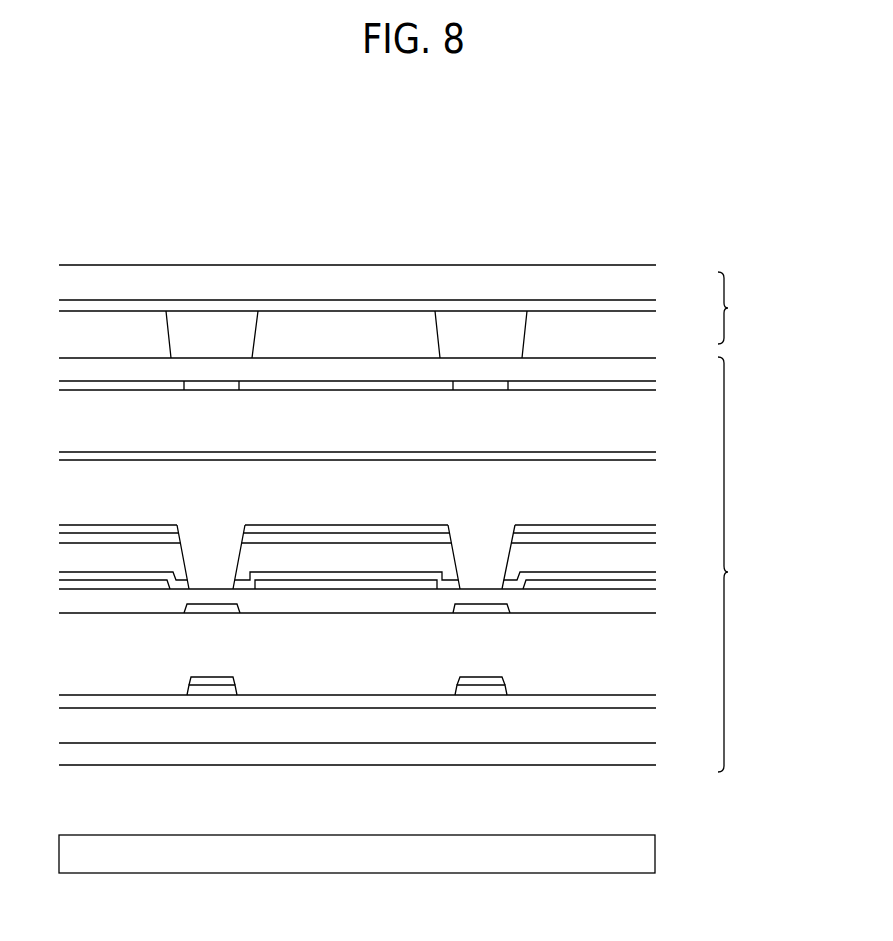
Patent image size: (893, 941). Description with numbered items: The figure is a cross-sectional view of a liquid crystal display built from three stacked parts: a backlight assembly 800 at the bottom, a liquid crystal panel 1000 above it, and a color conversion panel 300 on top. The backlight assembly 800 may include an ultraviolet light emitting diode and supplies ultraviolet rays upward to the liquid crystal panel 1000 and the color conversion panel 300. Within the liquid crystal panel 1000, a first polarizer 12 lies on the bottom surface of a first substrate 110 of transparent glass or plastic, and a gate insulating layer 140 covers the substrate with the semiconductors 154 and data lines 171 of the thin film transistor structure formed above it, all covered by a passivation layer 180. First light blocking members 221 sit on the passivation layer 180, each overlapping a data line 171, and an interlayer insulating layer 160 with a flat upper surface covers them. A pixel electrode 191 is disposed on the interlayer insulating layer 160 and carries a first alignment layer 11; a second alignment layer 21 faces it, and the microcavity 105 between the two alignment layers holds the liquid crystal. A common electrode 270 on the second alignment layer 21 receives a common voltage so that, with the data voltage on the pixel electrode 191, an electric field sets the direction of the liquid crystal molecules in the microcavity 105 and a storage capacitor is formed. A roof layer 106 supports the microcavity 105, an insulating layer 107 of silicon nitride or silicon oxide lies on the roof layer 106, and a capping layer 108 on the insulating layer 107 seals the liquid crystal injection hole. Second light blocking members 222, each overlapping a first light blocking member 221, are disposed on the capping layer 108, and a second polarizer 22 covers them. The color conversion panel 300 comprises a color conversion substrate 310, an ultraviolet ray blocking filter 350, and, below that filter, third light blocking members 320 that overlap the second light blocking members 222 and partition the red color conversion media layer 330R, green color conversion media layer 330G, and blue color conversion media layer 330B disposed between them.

The color conversion substrate 310 is at (640, 282).
The ultraviolet ray blocking filter 350 is at (645, 304).
The color conversion panel 300 is at (742, 308).
The third light blocking member 320 is at (491, 335).
The red color conversion media layer 330R is at (133, 348).
The green color conversion media layer 330G is at (369, 347).
The blue color conversion media layer 330B is at (615, 348).
The second polarizer 22 is at (647, 372).
The second light blocking member 222 is at (469, 385).
The capping layer 108 is at (647, 420).
The insulating layer 107 is at (647, 455).
The roof layer 106 is at (647, 492).
The common electrode 270 is at (333, 529).
The second alignment layer 21 is at (395, 538).
The microcavity 105 is at (457, 559).
The first alignment layer 11 is at (363, 576).
The pixel electrode 191 is at (405, 585).
The interlayer insulating layer 160 is at (110, 600).
The first light blocking member 221 is at (232, 608).
The passivation layer 180 is at (642, 650).
The data line 171 is at (223, 682).
The semiconductor 154 is at (198, 690).
The gate insulating layer 140 is at (647, 701).
The first substrate 110 is at (642, 723).
The first polarizer 12 is at (647, 753).
The liquid crystal panel 1000 is at (745, 564).
The backlight assembly 800 is at (645, 853).